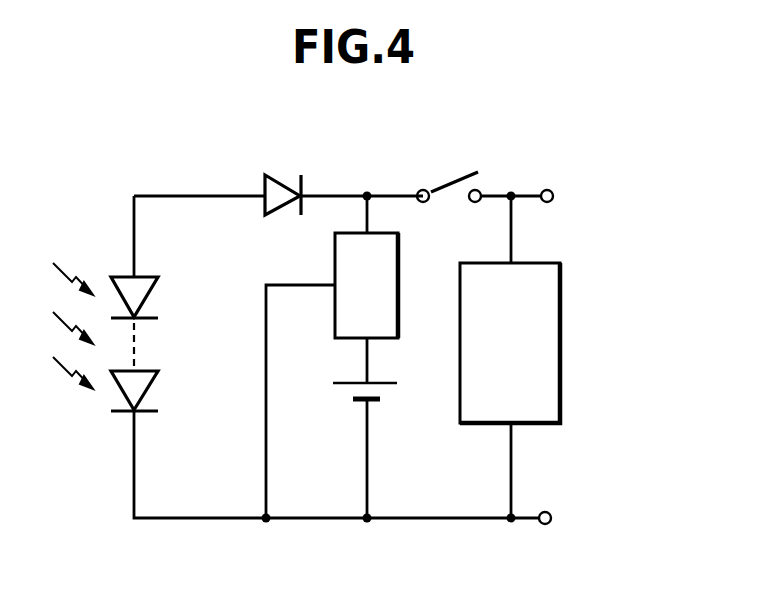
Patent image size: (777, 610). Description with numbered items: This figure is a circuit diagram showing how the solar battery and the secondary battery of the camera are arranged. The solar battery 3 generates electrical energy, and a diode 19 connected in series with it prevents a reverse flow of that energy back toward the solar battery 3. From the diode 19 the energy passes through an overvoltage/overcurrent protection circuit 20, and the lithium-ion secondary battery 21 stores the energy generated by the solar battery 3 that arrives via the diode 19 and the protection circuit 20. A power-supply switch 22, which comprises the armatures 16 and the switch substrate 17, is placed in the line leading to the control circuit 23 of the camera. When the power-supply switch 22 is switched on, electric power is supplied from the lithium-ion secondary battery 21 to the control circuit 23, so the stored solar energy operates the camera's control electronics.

The solar battery 3 is at (168, 275).
The diode 19 is at (286, 173).
The overvoltage/overcurrent protection circuit 20 is at (398, 256).
The lithium-ion secondary battery 21 is at (378, 390).
The power-supply switch 22 is at (473, 159).
The armatures 16 is at (449, 187).
The switch substrate 17 is at (447, 182).
The control circuit 23 is at (560, 347).